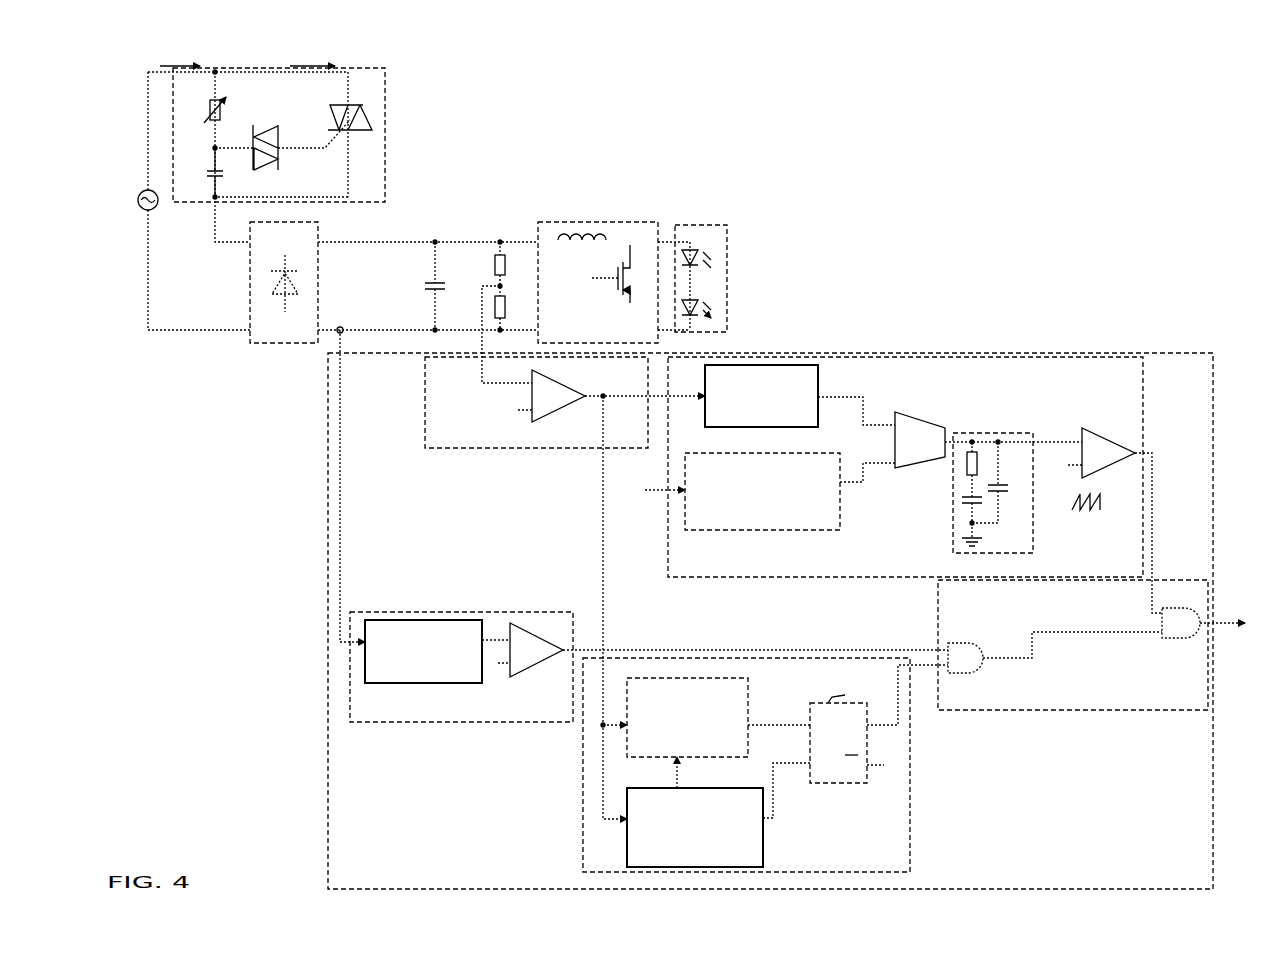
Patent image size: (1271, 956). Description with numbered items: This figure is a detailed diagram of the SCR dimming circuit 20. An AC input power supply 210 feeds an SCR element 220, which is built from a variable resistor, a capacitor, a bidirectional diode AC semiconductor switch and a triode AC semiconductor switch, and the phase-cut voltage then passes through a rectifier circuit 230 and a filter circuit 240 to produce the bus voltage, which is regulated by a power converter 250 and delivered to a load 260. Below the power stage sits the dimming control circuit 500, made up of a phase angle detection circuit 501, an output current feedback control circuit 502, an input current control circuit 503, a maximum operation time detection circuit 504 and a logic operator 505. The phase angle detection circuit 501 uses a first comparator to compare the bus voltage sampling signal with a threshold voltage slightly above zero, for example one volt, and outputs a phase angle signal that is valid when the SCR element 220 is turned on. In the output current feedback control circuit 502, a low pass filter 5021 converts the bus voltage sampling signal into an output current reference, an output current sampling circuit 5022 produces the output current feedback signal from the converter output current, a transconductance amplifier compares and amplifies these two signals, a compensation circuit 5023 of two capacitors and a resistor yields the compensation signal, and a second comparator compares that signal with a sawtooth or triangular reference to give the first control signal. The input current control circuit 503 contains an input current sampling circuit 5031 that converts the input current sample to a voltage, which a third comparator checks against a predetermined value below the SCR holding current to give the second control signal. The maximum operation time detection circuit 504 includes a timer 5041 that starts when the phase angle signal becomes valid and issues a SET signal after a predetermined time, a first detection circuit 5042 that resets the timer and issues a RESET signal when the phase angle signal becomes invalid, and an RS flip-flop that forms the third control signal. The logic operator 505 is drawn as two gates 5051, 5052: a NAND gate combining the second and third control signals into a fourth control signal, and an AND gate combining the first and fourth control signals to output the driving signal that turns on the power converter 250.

The SCR dimming circuit 20 is at (705, 72).
The AC input power supply 210 is at (137, 200).
The SCR element 220 is at (387, 98).
The rectifier circuit 230 is at (250, 292).
The filter circuit 240 is at (428, 284).
The power converter 250 is at (604, 220).
The load 260 is at (694, 225).
The dimming control circuit 500 is at (328, 790).
The phase angle detection circuit 501 is at (466, 441).
The output current feedback control circuit 502 is at (714, 571).
The low pass filter 5021 is at (779, 365).
The output current sampling circuit 5022 is at (800, 532).
The compensation circuit 5023 is at (1028, 551).
The input current control circuit 503 is at (461, 640).
The input current sampling circuit 5031 is at (420, 620).
The maximum operation time detection circuit 504 is at (882, 863).
The timer 5041 is at (707, 753).
The first detection circuit 5042 is at (713, 863).
The logic operator 505 is at (1011, 705).
The first AND gate 5051 is at (958, 641).
The second AND gate 5052 is at (1172, 640).